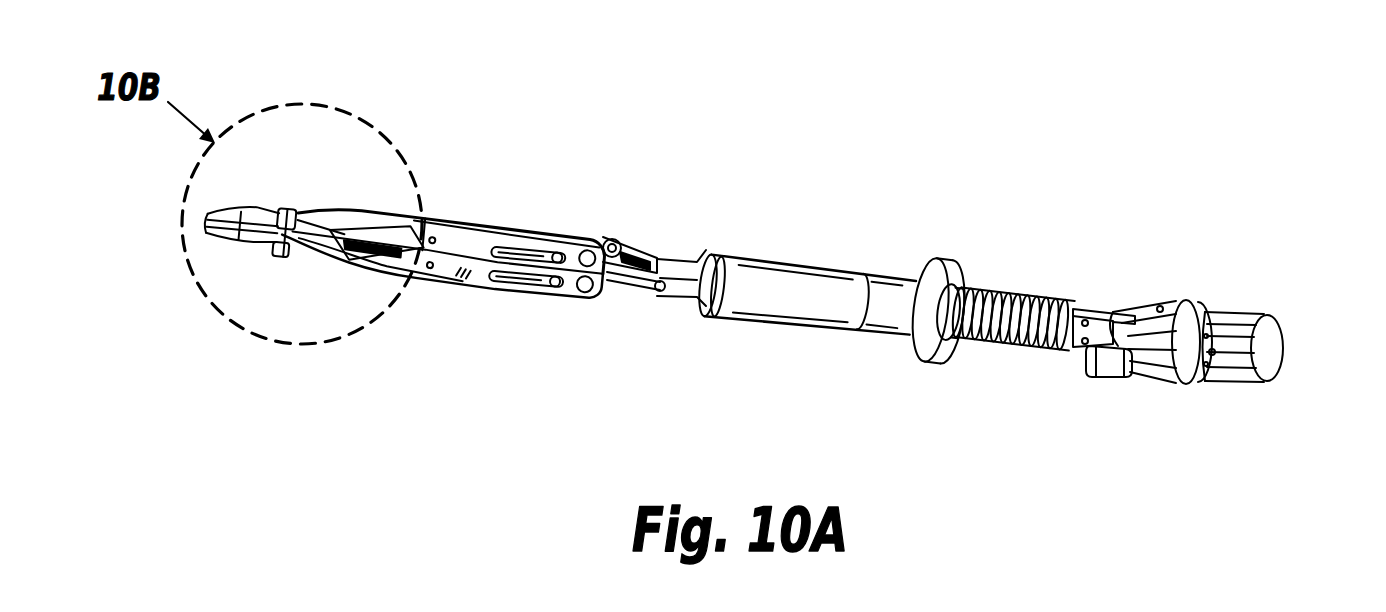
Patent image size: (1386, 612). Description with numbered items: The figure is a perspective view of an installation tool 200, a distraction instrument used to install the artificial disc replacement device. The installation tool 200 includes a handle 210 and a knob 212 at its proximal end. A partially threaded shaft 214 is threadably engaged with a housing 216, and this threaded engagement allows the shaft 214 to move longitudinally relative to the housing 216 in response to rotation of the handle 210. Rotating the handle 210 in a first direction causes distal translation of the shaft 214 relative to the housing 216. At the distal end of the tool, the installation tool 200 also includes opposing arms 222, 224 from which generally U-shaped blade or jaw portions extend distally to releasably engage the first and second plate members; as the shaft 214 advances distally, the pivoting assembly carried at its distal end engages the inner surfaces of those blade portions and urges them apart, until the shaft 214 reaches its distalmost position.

The installation tool 200 is at (820, 160).
The opposing arm 222 is at (470, 218).
The opposing arm 224 is at (487, 288).
The housing 216 is at (735, 318).
The partially threaded shaft 214 is at (1112, 312).
The handle 210 is at (1088, 376).
The knob 212 is at (1270, 345).